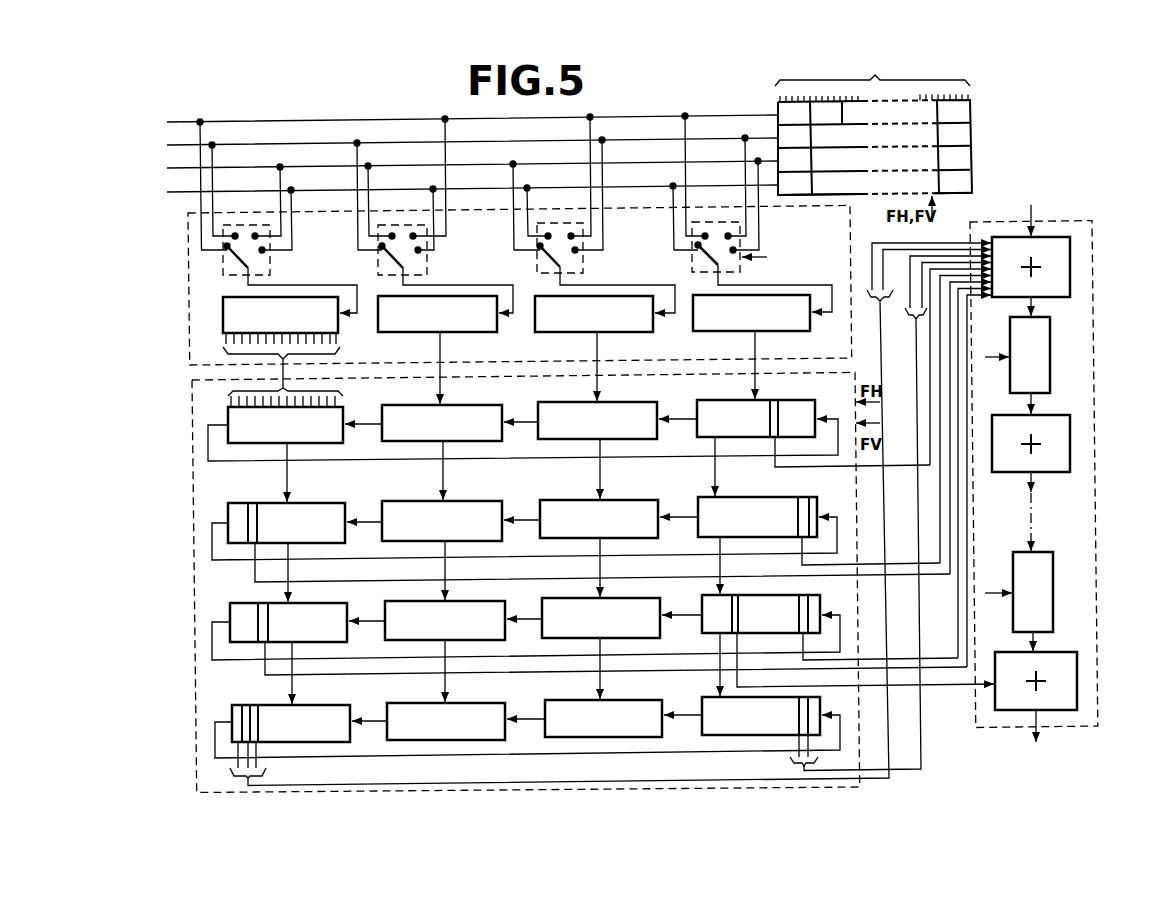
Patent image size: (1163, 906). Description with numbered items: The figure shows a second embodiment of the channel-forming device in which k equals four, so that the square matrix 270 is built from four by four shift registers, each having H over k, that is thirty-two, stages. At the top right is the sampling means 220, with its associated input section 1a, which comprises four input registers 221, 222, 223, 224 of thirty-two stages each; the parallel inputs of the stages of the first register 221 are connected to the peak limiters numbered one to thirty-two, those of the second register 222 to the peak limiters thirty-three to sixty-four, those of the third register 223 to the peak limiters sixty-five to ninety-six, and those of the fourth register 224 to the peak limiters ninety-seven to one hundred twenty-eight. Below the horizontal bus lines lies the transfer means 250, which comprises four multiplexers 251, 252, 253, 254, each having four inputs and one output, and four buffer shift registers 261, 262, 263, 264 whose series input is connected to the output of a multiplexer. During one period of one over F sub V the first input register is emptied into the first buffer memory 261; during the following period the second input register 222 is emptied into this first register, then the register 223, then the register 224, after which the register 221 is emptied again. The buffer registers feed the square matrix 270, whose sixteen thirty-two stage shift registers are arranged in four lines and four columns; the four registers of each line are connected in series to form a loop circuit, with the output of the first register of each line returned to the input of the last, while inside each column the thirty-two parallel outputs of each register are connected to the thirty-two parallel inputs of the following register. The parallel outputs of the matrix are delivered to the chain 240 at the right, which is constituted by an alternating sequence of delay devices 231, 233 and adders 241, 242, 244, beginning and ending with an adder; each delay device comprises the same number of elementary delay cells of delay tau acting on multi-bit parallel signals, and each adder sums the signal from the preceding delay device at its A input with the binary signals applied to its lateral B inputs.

The character storage section 1a is at (872, 67).
The sampling means 220 is at (975, 99).
The input register 221 is at (972, 106).
The input register 222 is at (972, 130).
The input register 223 is at (972, 153).
The input register 224 is at (972, 177).
The chain 240 is at (1092, 250).
The adder 241 is at (1070, 278).
The delay device 231 is at (1040, 366).
The adder 242 is at (1060, 450).
The delay device 233 is at (1045, 578).
The adder 244 is at (1065, 680).
The transfer means 250 is at (188, 310).
The multiplexer 251 is at (270, 272).
The multiplexer 252 is at (427, 272).
The multiplexer 253 is at (583, 262).
The multiplexer 254 is at (692, 262).
The buffer shift register 261 is at (240, 323).
The buffer shift register 262 is at (435, 310).
The buffer shift register 263 is at (598, 310).
The buffer shift register 264 is at (762, 310).
The square matrix 270 is at (192, 473).